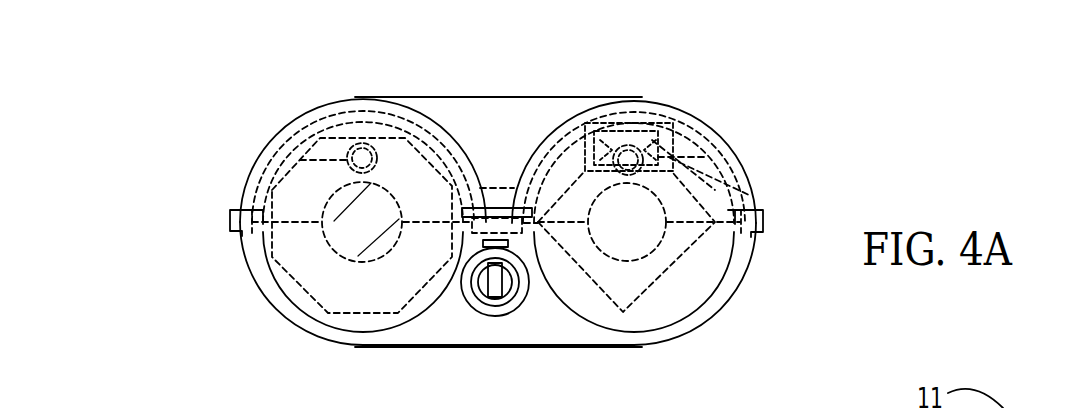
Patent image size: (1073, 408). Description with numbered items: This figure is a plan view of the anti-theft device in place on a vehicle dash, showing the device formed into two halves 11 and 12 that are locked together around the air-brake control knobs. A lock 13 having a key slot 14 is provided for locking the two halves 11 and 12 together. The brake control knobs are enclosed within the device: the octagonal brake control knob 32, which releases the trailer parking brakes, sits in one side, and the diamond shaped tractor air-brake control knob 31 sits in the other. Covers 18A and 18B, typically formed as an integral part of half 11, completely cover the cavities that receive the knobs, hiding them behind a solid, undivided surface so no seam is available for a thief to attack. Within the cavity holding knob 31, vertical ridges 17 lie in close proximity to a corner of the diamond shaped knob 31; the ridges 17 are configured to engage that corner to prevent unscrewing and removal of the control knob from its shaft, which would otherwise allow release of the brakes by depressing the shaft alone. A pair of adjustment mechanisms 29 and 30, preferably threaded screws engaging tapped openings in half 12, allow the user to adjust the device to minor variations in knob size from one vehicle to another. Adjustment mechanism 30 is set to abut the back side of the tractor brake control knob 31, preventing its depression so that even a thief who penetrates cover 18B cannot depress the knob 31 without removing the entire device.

The half 11 is at (328, 343).
The half 12 is at (484, 122).
The lock 13 is at (486, 325).
The key slot 14 is at (497, 297).
The vertical ridges 17 is at (704, 145).
The cover 18A is at (270, 154).
The cover 18B is at (634, 108).
The adjustment mechanism 29 is at (297, 152).
The adjustment mechanism 30 is at (752, 195).
The tractor air-brake control knob 31 is at (690, 263).
The octagonal brake control knob 32 is at (293, 276).